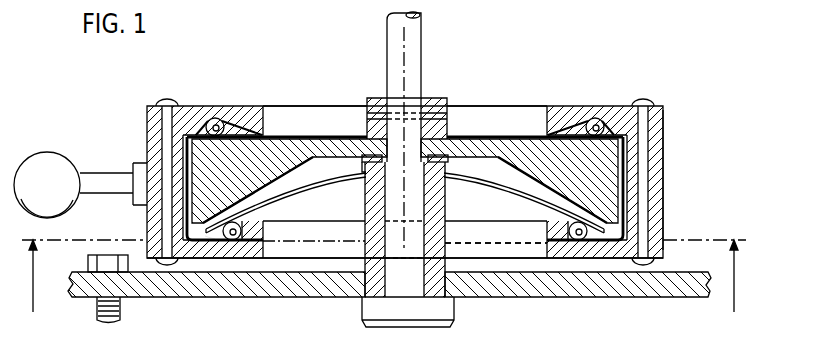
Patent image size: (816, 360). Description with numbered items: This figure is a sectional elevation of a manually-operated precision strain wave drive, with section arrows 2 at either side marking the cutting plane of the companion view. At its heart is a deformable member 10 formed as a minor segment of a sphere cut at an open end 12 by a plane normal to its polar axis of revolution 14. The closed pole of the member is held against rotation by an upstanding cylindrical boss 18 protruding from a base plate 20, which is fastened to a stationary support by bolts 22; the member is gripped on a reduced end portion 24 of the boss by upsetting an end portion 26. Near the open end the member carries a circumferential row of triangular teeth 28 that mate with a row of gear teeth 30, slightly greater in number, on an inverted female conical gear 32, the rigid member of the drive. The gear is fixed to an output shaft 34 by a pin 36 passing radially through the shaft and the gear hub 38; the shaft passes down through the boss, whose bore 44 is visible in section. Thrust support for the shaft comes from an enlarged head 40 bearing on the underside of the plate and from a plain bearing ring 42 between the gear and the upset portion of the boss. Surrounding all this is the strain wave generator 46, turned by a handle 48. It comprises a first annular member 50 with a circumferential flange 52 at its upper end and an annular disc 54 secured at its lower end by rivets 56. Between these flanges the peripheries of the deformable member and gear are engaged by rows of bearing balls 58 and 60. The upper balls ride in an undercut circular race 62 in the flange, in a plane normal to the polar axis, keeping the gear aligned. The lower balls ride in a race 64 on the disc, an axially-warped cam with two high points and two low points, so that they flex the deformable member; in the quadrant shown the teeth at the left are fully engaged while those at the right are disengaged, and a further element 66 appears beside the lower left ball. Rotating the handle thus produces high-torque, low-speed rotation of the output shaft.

The section line 2- 2 is at (384, 292).
The deformable member 10 is at (303, 191).
The open end 12 is at (205, 236).
The polar axis of revolution 14 is at (405, 55).
The cylindrical boss 18 is at (447, 204).
The base plate 20 is at (515, 300).
The bolts 22 is at (112, 320).
The reduced end portion 24 is at (370, 178).
The upset end portion 26 is at (360, 163).
The teeth 28 is at (228, 203).
The gear teeth 30 is at (542, 203).
The inverted female conical gear 32 is at (507, 137).
The output shaft 34 is at (421, 33).
The pin 36 is at (368, 115).
The hub 38 is at (442, 100).
The enlarged head 40 is at (364, 310).
The plain bearing ring 42 is at (448, 158).
The sleeve 44 is at (383, 205).
The strain wave generator 46 is at (667, 154).
The handle 48 is at (57, 186).
The first annular member 50 is at (664, 125).
The circumferential flange 52 is at (551, 107).
The annular disc 54 is at (609, 259).
The rivets 56 is at (644, 198).
The bearing balls 58 is at (597, 118).
The bearing balls 60 is at (589, 240).
The undercut circular race 62 is at (237, 130).
The race 64 is at (482, 243).
The lower left ball 66 is at (242, 220).